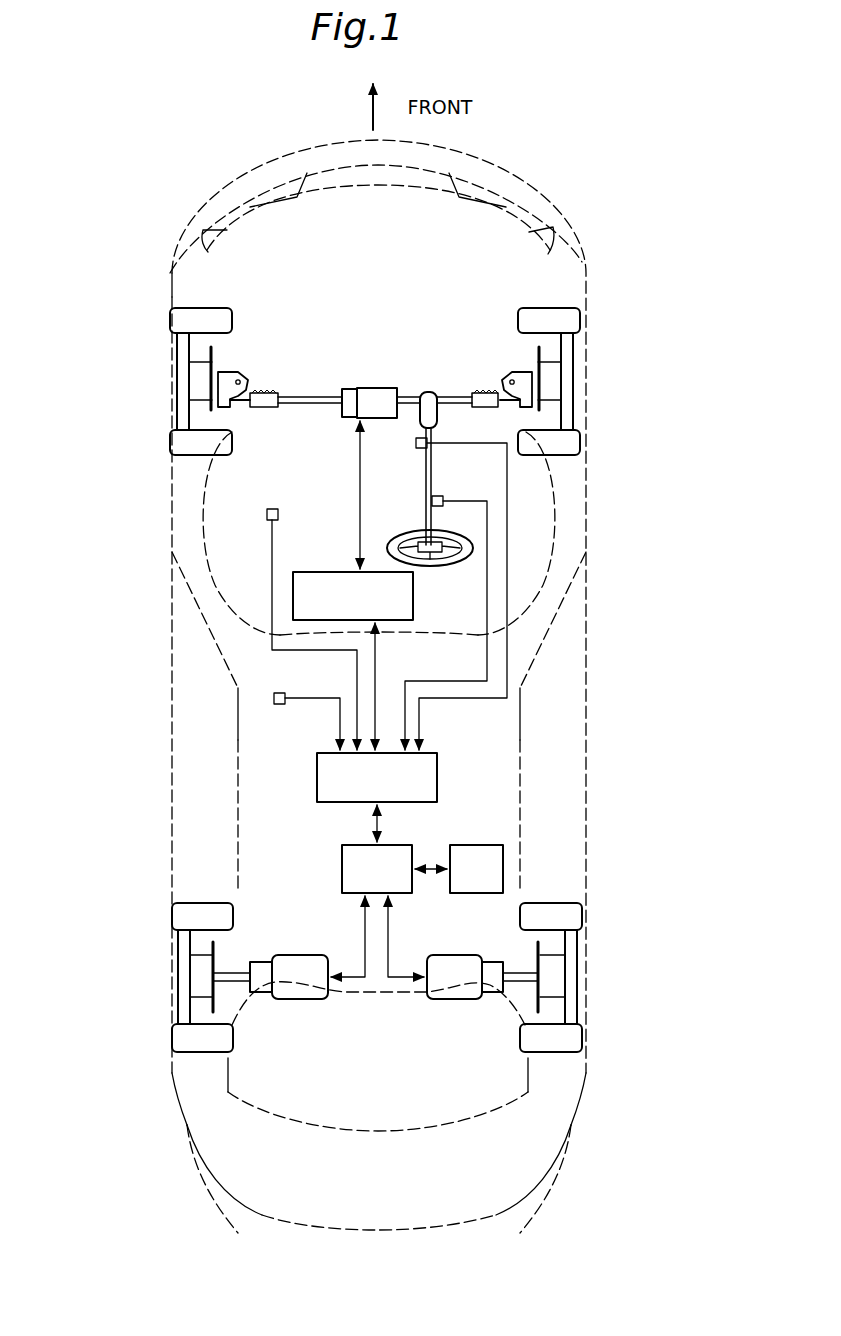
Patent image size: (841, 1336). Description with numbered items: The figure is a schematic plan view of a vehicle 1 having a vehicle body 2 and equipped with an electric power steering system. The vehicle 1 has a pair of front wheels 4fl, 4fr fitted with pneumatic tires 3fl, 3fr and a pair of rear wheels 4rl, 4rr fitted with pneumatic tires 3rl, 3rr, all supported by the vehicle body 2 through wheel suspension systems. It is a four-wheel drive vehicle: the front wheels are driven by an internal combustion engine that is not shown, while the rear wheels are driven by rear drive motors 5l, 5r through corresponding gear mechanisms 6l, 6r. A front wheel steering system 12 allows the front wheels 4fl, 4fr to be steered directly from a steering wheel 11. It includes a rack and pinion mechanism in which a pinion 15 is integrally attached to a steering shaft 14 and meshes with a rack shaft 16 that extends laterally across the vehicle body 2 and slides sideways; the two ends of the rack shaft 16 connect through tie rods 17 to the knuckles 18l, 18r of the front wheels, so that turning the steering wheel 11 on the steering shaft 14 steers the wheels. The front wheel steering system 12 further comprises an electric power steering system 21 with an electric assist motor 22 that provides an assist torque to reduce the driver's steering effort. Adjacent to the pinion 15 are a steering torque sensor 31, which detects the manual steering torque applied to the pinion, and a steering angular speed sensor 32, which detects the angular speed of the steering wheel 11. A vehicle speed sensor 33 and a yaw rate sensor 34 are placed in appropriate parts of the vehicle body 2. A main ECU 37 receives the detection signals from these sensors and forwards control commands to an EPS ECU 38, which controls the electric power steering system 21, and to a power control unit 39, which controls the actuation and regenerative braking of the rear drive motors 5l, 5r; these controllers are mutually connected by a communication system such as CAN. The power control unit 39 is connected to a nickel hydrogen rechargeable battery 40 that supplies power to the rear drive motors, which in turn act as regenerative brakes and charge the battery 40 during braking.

The vehicle 1 is at (590, 142).
The vehicle body 2 is at (582, 252).
The pneumatic tire 3fl is at (170, 445).
The pneumatic tire 3fr is at (580, 445).
The pneumatic tire 3rl is at (178, 1038).
The pneumatic tire 3rr is at (578, 1038).
The front wheel 4fl is at (170, 342).
The front wheel 4fr is at (580, 342).
The rear wheel 4rl is at (178, 973).
The rear wheel 4rr is at (578, 973).
The rear drive motor 5l is at (298, 992).
The rear drive motor 5r is at (470, 992).
The gear mechanism 6l is at (263, 993).
The gear mechanism 6r is at (491, 997).
The steering wheel 11 is at (427, 566).
The front wheel steering system 12 is at (390, 305).
The steering shaft 14 is at (426, 490).
The pinion 15 is at (429, 391).
The rack shaft 16 is at (404, 396).
The tie rod 17 is at (229, 407).
The knuckle 18l is at (232, 372).
The knuckle 18r is at (520, 372).
The electric power steering system 21 is at (376, 386).
The electric assist motor 22 is at (346, 419).
The steering torque sensor 31 is at (416, 443).
The steering angular speed sensor 32 is at (442, 499).
The vehicle speed sensor 33 is at (279, 512).
The yaw rate sensor 34 is at (285, 696).
The main ECU 37 is at (437, 758).
The EPS ECU 38 is at (400, 622).
The power control unit 39 is at (349, 857).
The nickel hydrogen rechargeable battery 40 is at (462, 848).